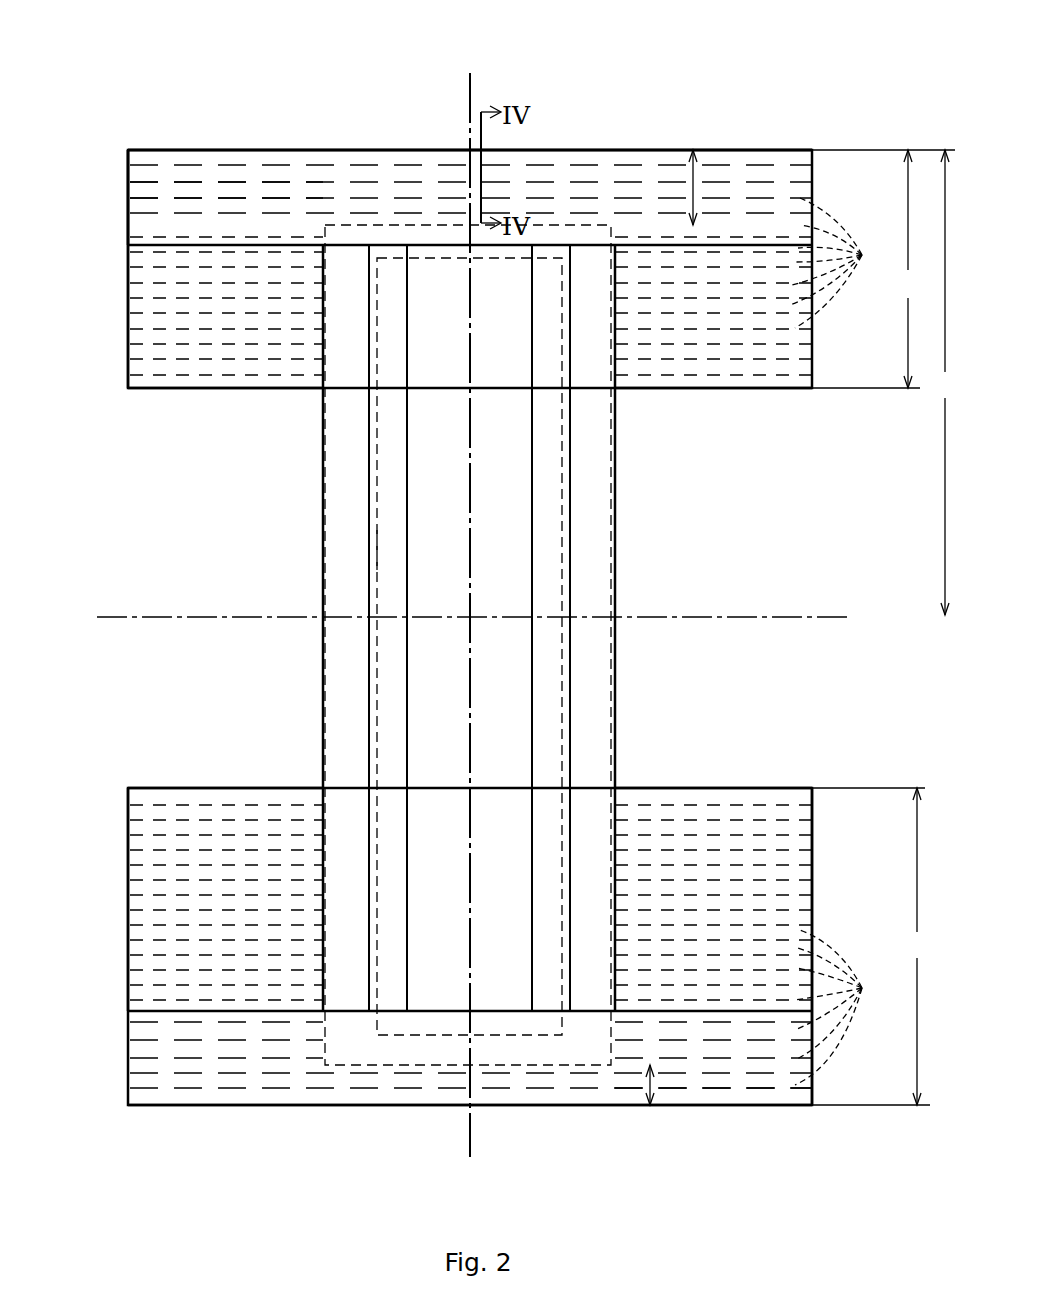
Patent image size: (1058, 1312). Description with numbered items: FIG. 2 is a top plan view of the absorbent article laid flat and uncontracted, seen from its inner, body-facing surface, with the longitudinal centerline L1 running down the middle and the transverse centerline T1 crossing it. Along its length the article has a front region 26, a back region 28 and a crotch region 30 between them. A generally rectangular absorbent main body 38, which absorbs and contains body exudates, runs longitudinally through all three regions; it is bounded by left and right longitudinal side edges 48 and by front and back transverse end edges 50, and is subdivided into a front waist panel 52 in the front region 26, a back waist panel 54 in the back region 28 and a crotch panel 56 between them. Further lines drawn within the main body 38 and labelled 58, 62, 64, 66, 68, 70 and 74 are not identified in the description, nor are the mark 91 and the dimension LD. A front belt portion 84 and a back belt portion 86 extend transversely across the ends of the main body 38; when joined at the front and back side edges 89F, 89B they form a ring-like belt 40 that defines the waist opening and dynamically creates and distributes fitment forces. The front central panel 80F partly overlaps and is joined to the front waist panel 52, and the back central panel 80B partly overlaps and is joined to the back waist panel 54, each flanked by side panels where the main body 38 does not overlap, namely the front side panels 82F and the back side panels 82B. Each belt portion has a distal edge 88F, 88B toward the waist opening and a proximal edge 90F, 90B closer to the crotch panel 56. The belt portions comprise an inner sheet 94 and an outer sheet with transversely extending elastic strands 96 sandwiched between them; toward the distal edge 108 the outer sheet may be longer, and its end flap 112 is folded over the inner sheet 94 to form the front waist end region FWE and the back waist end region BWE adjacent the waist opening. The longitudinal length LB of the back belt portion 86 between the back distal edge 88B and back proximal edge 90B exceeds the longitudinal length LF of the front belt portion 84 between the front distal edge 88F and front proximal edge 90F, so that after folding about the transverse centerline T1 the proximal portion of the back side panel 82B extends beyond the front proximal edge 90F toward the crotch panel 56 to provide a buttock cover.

The front region 26 is at (126, 262).
The back region 28 is at (126, 1010).
The crotch region 30 is at (138, 573).
The absorbent main body 38 is at (618, 487).
The ring-like belt 40 is at (826, 185).
The longitudinal side edge 48 is at (323, 512).
The transverse end edge 50 is at (430, 222).
The front waist panel 52 is at (290, 390).
The back waist panel 54 is at (321, 812).
The crotch panel 56 is at (321, 710).
The center line region 58 is at (510, 608).
The core side edge 62 is at (377, 548).
The elastic member 64 is at (392, 572).
The elastic member 66 is at (407, 660).
The leg cuff 68 is at (369, 585).
The inner edge 70 is at (369, 652).
The backsheet 74 is at (388, 230).
The front central panel 80F is at (535, 175).
The back central panel 80B is at (452, 1080).
The front side portion 82F is at (153, 367).
The back side panel 82B is at (168, 814).
The front belt portion 84 is at (770, 150).
The back belt portion 86 is at (203, 1105).
The front distal edge 88F is at (653, 150).
The back distal edge 88B is at (253, 1105).
The front side edge 89F is at (128, 225).
The back side edge 89B is at (128, 855).
The front proximal edge 90F is at (210, 390).
The back proximal edge 90B is at (210, 788).
The corner 91 is at (158, 147).
The inner sheet 94 is at (165, 320).
The elastic strands 96 is at (843, 641).
The distal edge 108 is at (283, 175).
The end flap 112 is at (232, 188).
The longitudinal centerline L1 is at (468, 92).
The transverse centerline T1 is at (803, 615).
The longitudinal length of front belt portion LF is at (883, 269).
The half length LD is at (944, 382).
The longitudinal length of back belt portion LB is at (872, 946).
The front waist end region FWE is at (700, 188).
The back waist end region BWE is at (673, 1085).